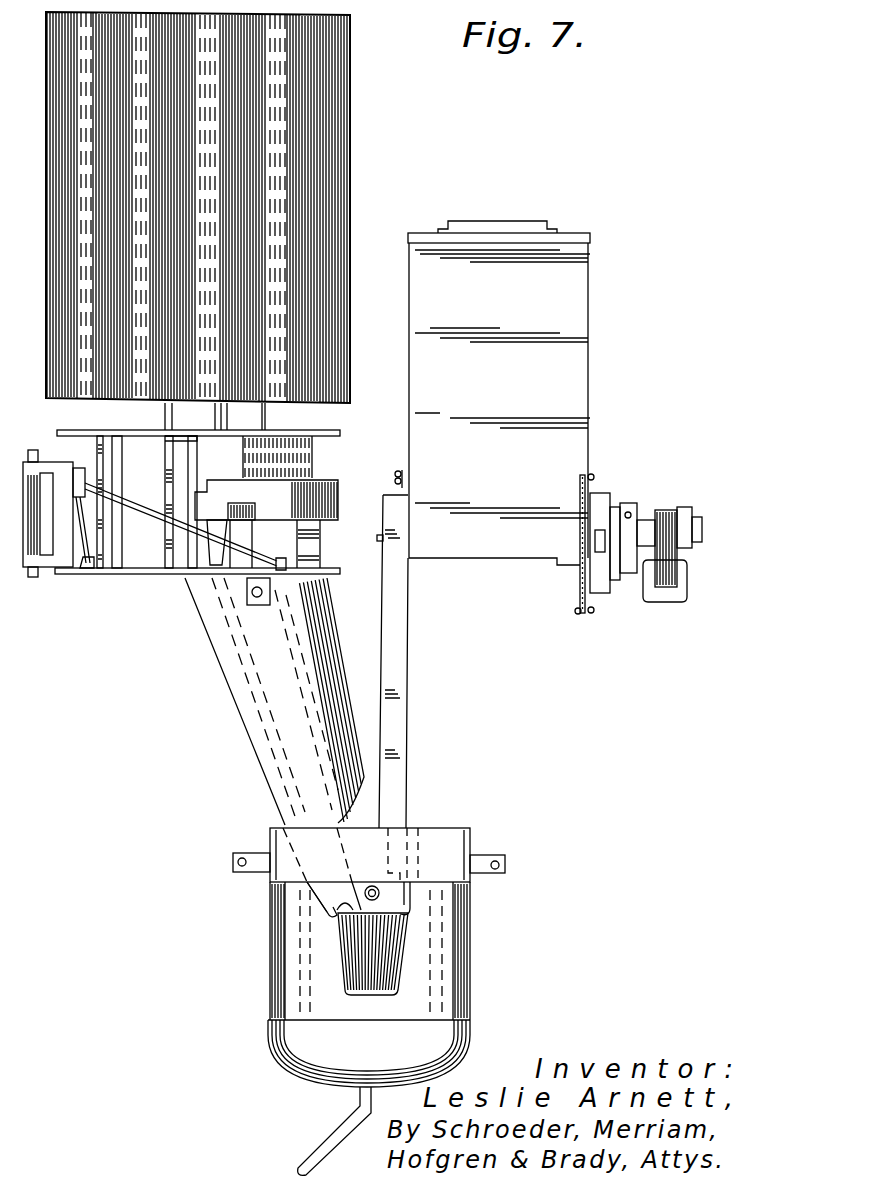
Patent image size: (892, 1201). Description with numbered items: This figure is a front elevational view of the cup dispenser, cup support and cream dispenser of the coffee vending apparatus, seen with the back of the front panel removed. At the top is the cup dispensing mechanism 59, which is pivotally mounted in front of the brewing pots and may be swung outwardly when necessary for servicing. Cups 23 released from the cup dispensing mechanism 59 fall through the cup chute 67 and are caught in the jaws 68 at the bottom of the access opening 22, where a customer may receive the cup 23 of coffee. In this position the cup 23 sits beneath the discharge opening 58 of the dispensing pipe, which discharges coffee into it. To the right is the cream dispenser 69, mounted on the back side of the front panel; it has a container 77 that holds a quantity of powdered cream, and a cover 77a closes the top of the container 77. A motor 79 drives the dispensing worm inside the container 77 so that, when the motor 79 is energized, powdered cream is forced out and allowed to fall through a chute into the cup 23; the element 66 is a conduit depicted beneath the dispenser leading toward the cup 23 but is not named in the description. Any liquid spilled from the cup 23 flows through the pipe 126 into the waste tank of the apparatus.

The cup dispensing mechanism 59 is at (297, 150).
The cover 77a is at (592, 238).
The container 77 is at (562, 326).
The cream dispenser 69 is at (590, 420).
The motor 79 is at (640, 505).
The cup chute 67 is at (258, 697).
The conduit 66 is at (398, 731).
The discharge opening 58 is at (372, 886).
The jaws 68 is at (323, 913).
The access opening 22 is at (282, 967).
The cup 23 is at (410, 963).
The pipe 126 is at (335, 1142).